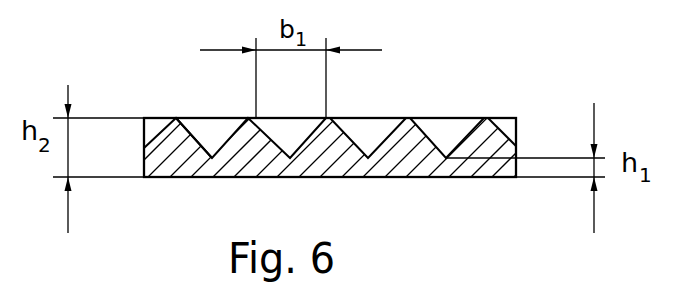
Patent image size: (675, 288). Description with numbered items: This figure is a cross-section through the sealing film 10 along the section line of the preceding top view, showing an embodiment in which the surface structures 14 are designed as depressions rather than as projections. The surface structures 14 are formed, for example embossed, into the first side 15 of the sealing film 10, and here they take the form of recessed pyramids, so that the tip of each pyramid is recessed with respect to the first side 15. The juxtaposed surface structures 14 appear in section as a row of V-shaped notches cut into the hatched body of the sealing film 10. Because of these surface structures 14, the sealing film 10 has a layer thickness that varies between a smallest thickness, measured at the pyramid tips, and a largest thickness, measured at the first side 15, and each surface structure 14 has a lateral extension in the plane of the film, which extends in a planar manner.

The sealing film 10 is at (407, 160).
The surface structures 14 is at (446, 129).
The first side 15 is at (167, 117).